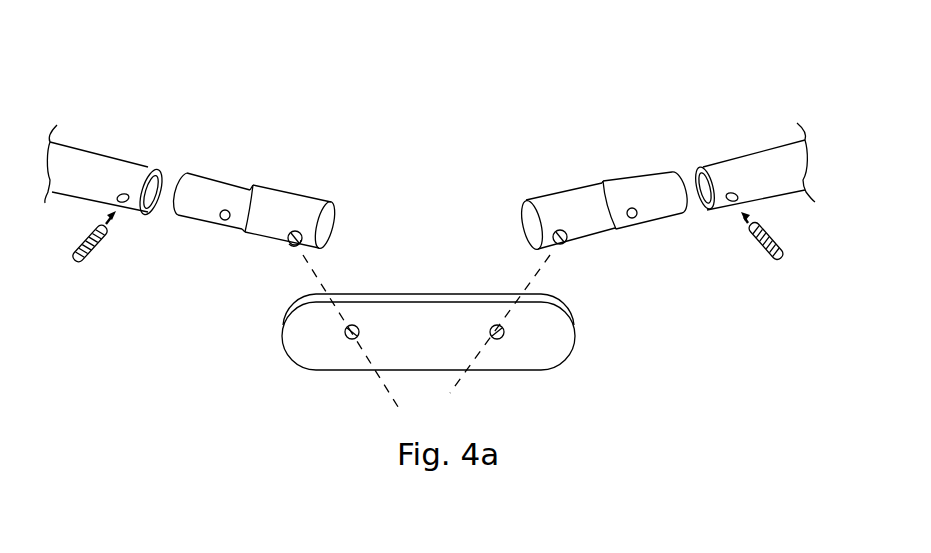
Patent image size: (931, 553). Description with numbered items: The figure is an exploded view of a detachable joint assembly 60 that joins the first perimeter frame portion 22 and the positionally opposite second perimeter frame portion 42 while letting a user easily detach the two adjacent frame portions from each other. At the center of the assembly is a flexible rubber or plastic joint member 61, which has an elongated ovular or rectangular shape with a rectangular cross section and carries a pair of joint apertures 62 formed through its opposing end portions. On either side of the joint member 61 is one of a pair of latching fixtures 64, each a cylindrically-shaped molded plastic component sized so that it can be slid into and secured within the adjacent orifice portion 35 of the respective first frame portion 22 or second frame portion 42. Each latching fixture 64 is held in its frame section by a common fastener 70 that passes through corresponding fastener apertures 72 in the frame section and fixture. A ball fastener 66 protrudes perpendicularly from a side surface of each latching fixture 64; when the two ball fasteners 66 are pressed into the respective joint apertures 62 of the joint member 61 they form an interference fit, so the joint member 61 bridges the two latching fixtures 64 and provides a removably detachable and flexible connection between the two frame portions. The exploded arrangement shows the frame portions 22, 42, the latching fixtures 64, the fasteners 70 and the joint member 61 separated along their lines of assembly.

The detachable joint assembly 60 is at (362, 110).
The second perimeter frame portion 42 is at (78, 162).
The first perimeter frame portion 22 is at (768, 152).
The orifice portion 35 is at (145, 212).
The fastener 70 is at (73, 257).
The fastener aperture 72 is at (220, 212).
The ball fastener 66 is at (300, 234).
The latching fixture 64 is at (258, 222).
The joint member 61 is at (428, 322).
The joint aperture 62 is at (348, 337).